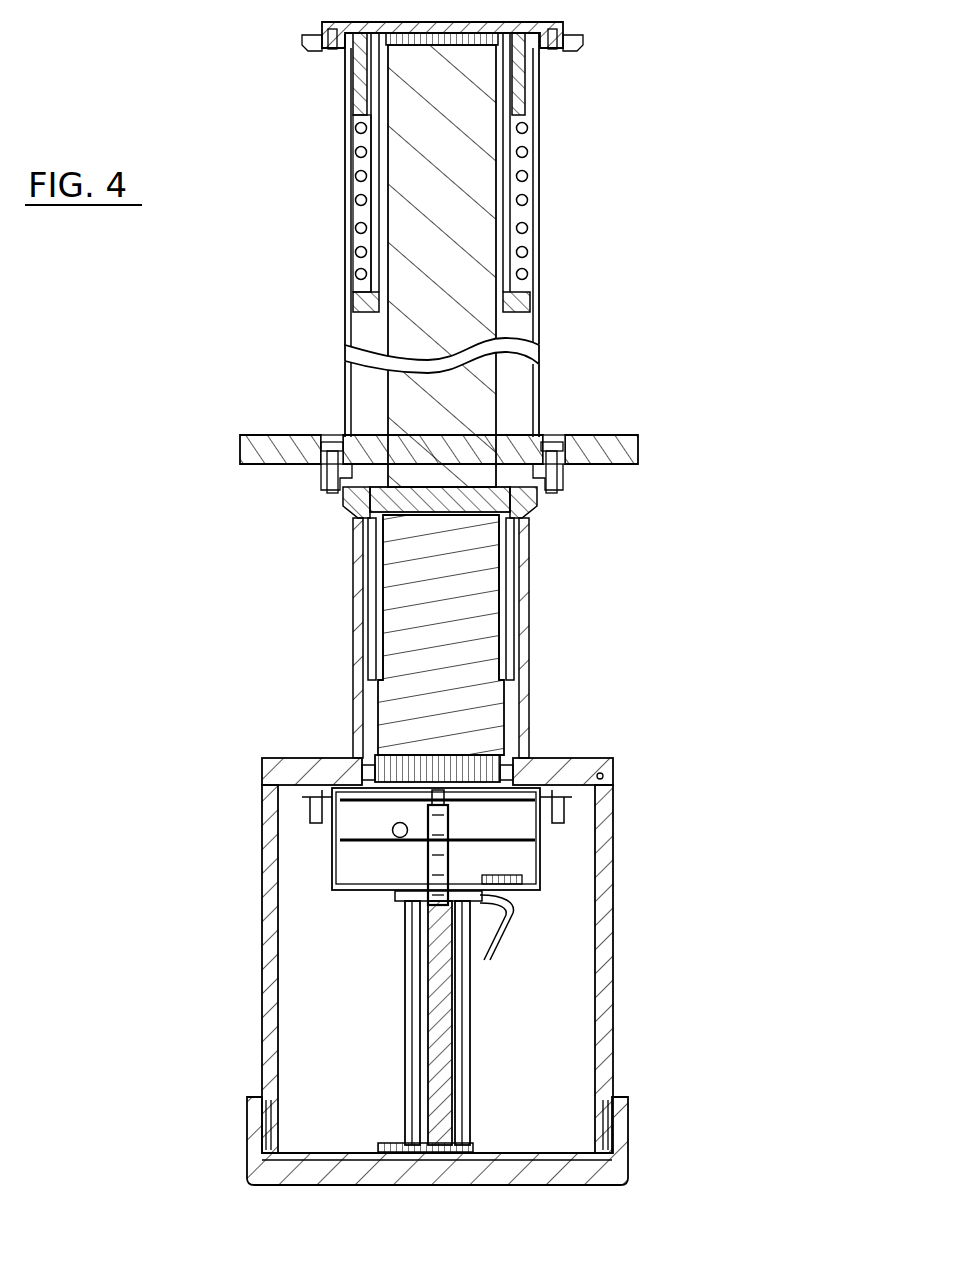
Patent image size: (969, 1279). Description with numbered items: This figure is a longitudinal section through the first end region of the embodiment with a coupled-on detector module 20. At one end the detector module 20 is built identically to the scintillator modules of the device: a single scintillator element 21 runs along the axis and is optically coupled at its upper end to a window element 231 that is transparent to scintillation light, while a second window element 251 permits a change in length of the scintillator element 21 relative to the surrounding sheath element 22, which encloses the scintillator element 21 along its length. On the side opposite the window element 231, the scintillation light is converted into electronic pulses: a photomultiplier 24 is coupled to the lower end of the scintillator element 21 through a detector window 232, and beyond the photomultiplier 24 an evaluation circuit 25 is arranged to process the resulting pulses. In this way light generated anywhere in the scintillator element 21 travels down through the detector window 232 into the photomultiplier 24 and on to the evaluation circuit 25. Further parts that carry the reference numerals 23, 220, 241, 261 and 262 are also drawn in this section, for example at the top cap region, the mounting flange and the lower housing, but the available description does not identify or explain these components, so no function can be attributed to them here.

The detector module 20 is at (632, 560).
The scintillator element 21 is at (464, 239).
The sheath element 22 is at (541, 247).
The housing 23 is at (604, 775).
The photomultiplier 24 is at (462, 640).
The evaluation circuit 25 is at (362, 1003).
The mounting flange 220 is at (633, 435).
The window element 231 is at (448, 33).
The detector window 232 is at (370, 507).
The end cap 241 is at (570, 34).
The window element 251 is at (346, 238).
The spring 261 is at (527, 187).
The guide sleeve 262 is at (541, 93).